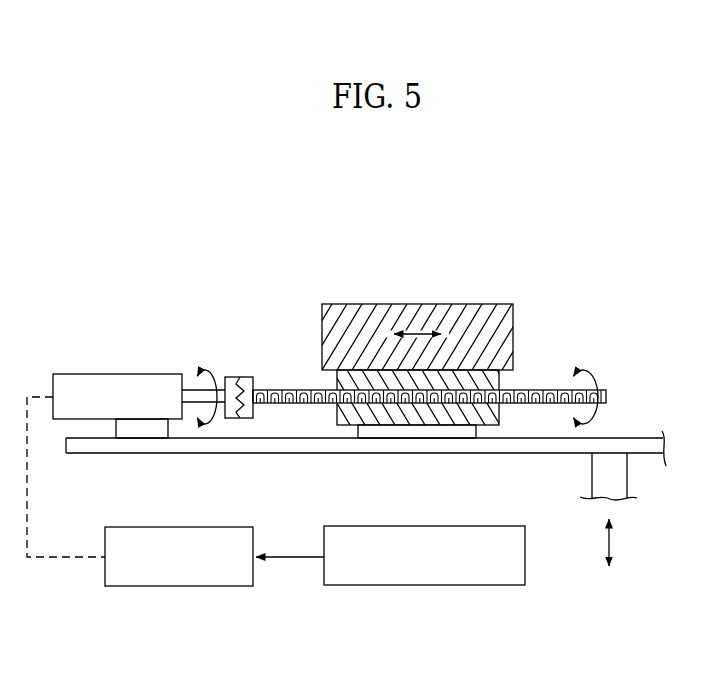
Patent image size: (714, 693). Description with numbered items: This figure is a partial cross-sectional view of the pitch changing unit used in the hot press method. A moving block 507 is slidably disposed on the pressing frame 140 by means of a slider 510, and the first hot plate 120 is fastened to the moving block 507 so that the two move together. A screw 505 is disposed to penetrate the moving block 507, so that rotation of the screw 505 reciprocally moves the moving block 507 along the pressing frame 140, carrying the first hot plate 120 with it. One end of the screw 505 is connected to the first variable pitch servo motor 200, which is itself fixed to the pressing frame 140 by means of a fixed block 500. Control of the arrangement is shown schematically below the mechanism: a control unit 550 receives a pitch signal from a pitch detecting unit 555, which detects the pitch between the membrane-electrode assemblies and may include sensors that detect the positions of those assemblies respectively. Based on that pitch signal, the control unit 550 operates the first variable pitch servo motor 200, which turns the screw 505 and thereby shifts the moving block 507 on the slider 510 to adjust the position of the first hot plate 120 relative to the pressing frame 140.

The first variable pitch servo motor 200 is at (97, 383).
The first hot plate 120 is at (322, 329).
The pressing frame 140 is at (490, 445).
The fixed block 500 is at (132, 433).
The screw 505 is at (275, 405).
The moving block 507 is at (352, 417).
The slider 510 is at (418, 433).
The control unit 550 is at (178, 588).
The pitch detecting unit 555 is at (418, 587).